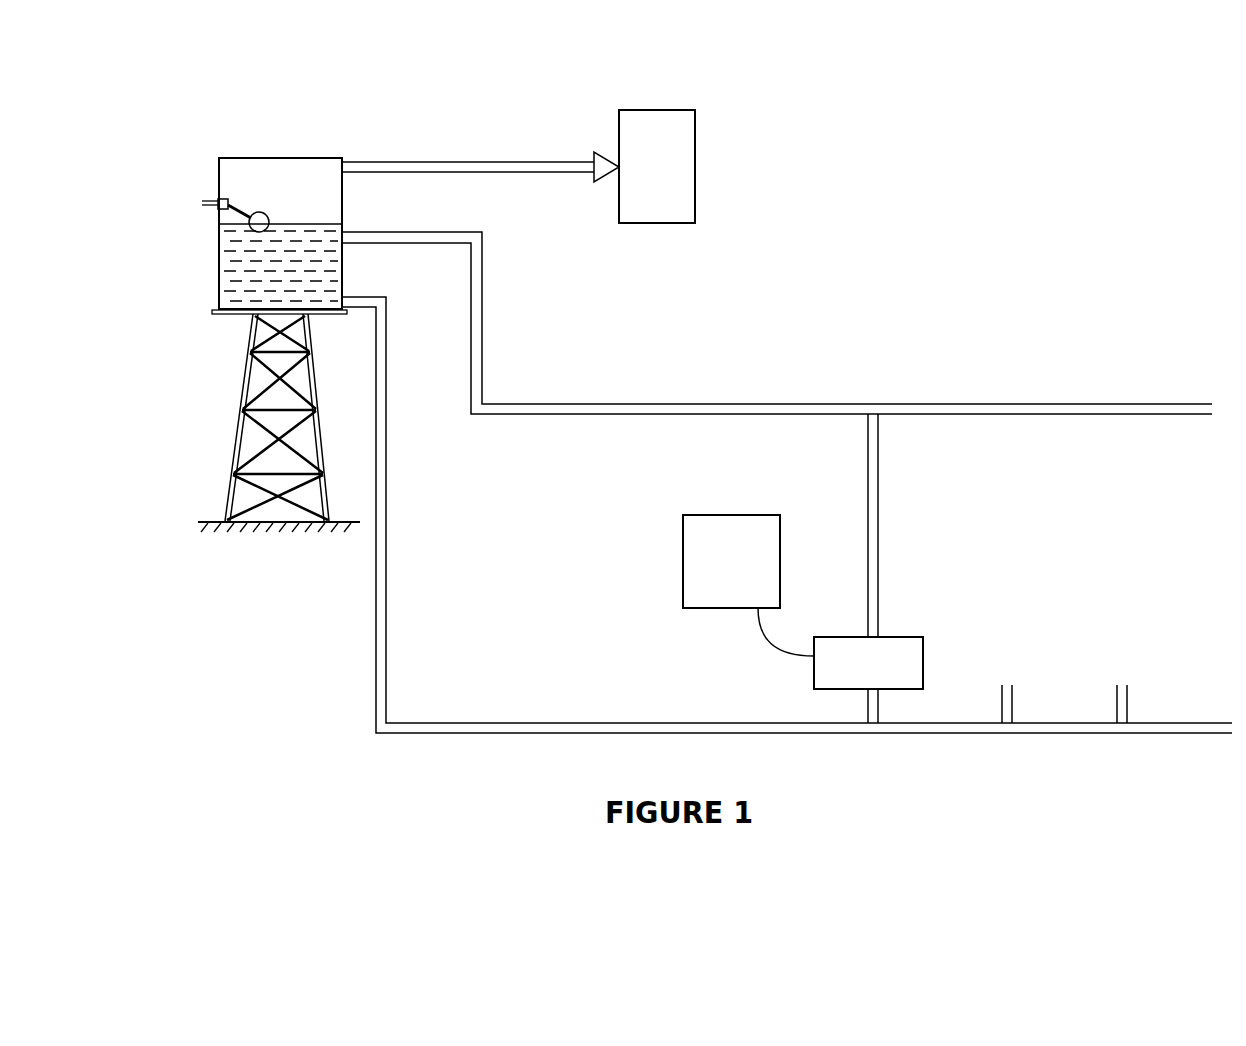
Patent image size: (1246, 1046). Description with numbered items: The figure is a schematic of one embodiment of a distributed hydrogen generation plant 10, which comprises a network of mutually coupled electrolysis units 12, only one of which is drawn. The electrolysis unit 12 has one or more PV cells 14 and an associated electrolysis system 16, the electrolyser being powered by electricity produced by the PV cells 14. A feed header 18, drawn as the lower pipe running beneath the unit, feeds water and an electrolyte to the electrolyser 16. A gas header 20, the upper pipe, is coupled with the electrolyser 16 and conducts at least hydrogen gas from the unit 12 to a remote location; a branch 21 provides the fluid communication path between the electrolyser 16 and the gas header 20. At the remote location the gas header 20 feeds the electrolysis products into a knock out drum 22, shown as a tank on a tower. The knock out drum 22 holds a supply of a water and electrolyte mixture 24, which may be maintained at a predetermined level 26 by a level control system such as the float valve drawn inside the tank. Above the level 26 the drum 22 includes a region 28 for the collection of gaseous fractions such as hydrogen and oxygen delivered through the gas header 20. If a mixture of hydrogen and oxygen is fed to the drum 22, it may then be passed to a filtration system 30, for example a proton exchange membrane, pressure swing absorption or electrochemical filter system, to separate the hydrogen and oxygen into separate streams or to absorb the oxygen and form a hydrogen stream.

The distributed hydrogen generation plant 10 is at (796, 225).
The electrolysis unit 12 is at (642, 529).
The PV cell 14 is at (683, 580).
The electrolysis system 16 is at (912, 643).
The feed header 18 is at (376, 571).
The gas header 20 is at (793, 402).
The branch 21 is at (877, 505).
The knock out drum 22 is at (358, 270).
The water and electrolyte mixture 24 is at (243, 255).
The predetermined level 26 is at (307, 223).
The region 28 is at (252, 178).
The filtration system 30 is at (688, 166).